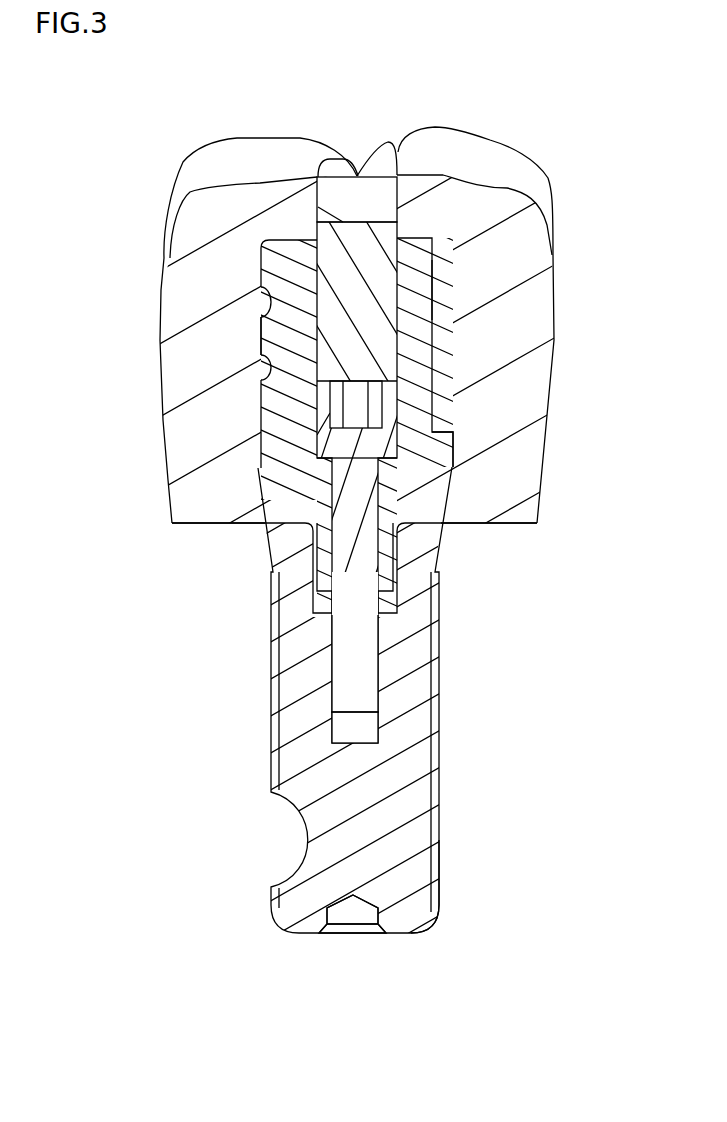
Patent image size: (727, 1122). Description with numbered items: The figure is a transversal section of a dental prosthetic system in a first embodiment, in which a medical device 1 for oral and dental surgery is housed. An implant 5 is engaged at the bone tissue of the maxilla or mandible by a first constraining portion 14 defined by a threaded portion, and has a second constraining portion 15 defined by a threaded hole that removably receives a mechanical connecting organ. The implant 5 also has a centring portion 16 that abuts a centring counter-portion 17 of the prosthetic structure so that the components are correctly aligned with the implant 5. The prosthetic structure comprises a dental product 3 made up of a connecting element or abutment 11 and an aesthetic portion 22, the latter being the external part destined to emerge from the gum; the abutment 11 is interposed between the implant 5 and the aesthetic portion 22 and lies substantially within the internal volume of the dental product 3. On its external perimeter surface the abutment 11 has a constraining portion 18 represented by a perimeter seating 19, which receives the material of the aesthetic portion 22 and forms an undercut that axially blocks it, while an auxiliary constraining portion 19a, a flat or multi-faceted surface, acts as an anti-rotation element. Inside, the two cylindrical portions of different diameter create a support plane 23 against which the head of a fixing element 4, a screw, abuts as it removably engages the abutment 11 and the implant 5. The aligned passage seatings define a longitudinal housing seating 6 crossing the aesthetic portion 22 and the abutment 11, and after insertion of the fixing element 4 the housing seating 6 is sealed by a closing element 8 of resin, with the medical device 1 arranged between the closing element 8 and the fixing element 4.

The medical device 1 is at (323, 335).
The dental product 3 is at (542, 164).
The fixing element 4 is at (387, 440).
The implant 5 is at (443, 857).
The longitudinal housing seating 6 is at (314, 257).
The closing element 8 is at (384, 163).
The connecting element or abutment 11 is at (422, 354).
The first constraining portion 14 is at (438, 746).
The second constraining portion 15 is at (378, 657).
The centring portion 16 is at (399, 566).
The centring counter-portion 17 is at (316, 563).
The constraining portion 18 is at (263, 307).
The perimeter seating 19 is at (261, 370).
The auxiliary constraining portion 19a is at (435, 294).
The aesthetic portion 22 is at (212, 172).
The support plane 23 is at (268, 530).